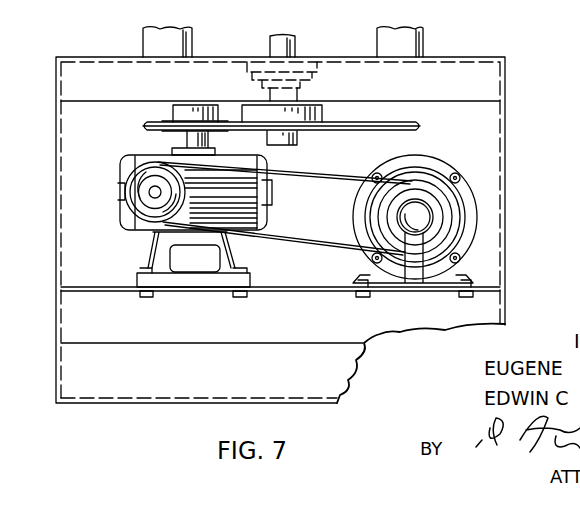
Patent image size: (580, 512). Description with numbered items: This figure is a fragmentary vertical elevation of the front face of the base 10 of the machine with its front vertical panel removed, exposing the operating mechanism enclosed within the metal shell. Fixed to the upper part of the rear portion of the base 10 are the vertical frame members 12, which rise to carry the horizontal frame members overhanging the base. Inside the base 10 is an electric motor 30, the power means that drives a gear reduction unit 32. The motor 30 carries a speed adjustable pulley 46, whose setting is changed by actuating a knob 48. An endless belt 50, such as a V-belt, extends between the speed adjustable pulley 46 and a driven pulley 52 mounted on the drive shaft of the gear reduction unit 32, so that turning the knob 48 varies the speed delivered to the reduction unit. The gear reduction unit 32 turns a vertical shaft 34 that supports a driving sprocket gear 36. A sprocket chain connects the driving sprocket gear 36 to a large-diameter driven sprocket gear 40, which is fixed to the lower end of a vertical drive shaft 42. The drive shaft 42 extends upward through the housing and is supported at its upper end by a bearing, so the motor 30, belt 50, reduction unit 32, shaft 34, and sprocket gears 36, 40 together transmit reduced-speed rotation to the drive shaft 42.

The base 10 is at (505, 173).
The vertical frame members 12 is at (192, 40).
The electric motor 30 is at (472, 227).
The gear reduction unit 32 is at (122, 220).
The vertical shaft 34 is at (187, 142).
The driving sprocket gear 36 is at (172, 122).
The driven sprocket gear 40 is at (416, 130).
The vertical drive shaft 42 is at (295, 43).
The speed adjustable pulley 46 is at (442, 208).
The knob 48 is at (413, 211).
The endless belt 50 is at (308, 174).
The driven pulley 52 is at (147, 184).